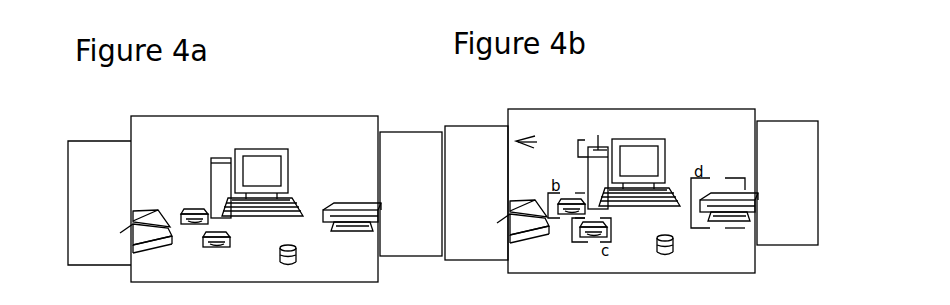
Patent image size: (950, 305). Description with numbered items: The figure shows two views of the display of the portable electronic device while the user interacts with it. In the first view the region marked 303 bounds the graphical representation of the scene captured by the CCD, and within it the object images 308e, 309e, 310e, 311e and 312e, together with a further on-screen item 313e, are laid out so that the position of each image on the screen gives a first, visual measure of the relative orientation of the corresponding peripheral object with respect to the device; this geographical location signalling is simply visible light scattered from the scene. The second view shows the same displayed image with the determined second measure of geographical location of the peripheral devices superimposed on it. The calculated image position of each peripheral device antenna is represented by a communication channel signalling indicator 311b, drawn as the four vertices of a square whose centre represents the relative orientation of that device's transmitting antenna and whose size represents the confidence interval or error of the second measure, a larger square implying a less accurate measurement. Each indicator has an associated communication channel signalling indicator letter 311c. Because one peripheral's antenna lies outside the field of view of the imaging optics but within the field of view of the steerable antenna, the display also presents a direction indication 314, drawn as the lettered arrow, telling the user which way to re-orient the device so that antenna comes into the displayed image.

In FIG. 4A, the room 303 is at (154, 134).
In FIG. 4B, the room 303 is at (745, 256).
In FIG. 4A, the object image on screen 308e is at (138, 227).
In FIG. 4A, the object image on screen 309e is at (133, 243).
In FIG. 4A, the object image on screen 310e is at (205, 242).
In FIG. 4A, the object image on screen 311e is at (211, 157).
In FIG. 4A, the object image on screen 312e is at (372, 214).
In FIG. 4A, the storage device 313e is at (298, 257).
In FIG. 4B, the person indicator 314 is at (527, 128).
In FIG. 4B, the communication channel signalling indicator 311b is at (595, 135).
In FIG. 4B, the communication channel signalling indicator letter 311c is at (587, 124).